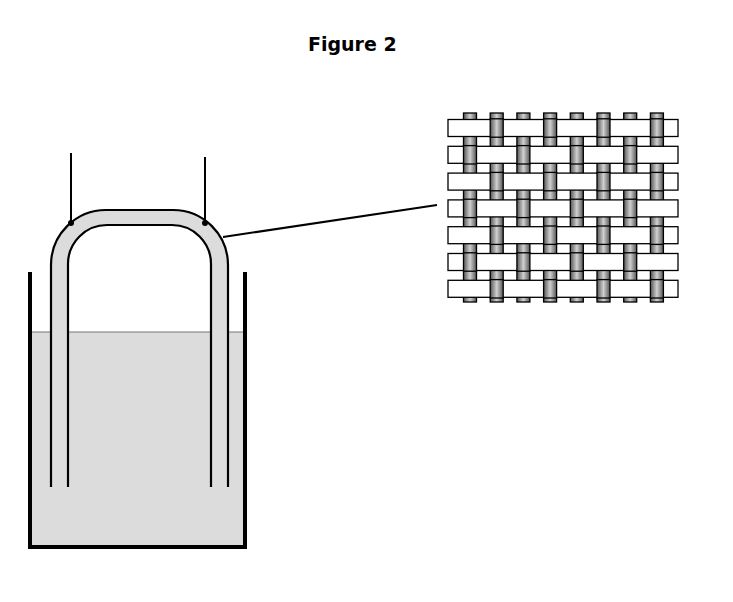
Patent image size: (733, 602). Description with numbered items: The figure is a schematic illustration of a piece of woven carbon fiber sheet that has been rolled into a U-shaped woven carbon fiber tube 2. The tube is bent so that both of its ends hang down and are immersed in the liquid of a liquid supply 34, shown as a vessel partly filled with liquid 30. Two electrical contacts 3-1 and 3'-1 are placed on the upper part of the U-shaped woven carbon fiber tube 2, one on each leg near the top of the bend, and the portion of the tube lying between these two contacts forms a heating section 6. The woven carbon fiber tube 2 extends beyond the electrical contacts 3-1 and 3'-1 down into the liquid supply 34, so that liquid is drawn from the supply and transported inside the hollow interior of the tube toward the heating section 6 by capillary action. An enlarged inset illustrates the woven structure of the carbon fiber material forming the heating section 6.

The woven carbon fiber tube 2 is at (227, 378).
The heating section 6 is at (137, 212).
The electrolyte solution 30 is at (217, 443).
The liquid supply 34 is at (246, 503).
The electrical contact 3-1 is at (78, 175).
The electrical contact 3'-1 is at (206, 175).